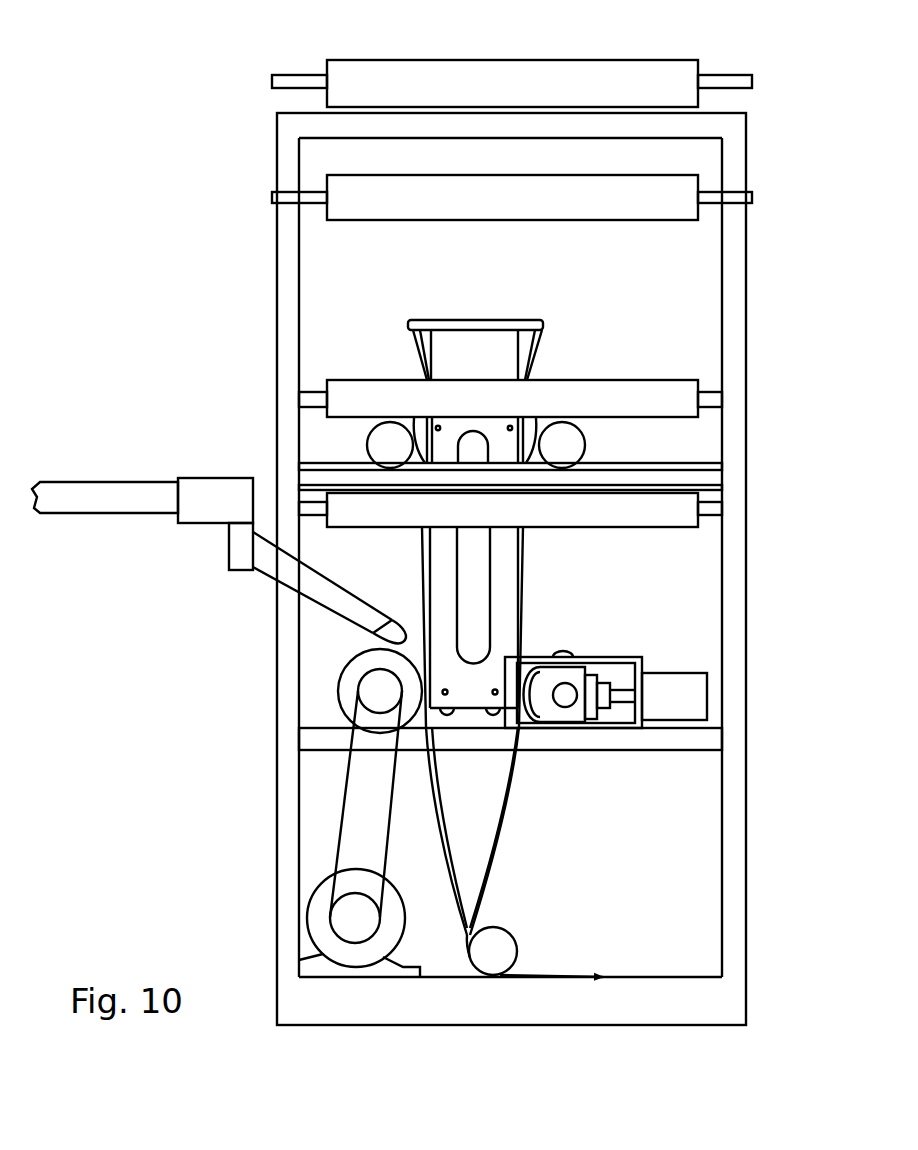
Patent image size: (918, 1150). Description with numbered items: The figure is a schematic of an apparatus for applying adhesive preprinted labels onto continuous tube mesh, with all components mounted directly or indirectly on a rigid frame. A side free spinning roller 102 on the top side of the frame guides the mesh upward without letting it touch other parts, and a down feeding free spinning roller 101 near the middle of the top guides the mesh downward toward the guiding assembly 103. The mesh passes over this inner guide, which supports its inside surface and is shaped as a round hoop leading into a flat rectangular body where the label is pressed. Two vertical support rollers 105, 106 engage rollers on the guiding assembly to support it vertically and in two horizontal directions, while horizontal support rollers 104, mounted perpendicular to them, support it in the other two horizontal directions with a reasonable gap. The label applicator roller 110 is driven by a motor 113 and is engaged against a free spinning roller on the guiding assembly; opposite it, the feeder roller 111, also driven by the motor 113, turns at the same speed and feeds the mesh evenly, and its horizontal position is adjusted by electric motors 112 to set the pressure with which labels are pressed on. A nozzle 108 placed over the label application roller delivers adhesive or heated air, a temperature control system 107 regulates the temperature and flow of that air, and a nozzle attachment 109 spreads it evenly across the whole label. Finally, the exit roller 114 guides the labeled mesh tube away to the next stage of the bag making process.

The down feeding free spinning roller 101 is at (627, 32).
The side free spinning roller 102 is at (570, 195).
The guiding assembly 103 is at (528, 328).
The horizontal support rollers 104 is at (628, 357).
The vertical support roller 105 is at (575, 455).
The vertical support roller 106 is at (376, 456).
The temperature control system 107 is at (155, 503).
The nozzle 108 is at (313, 577).
The nozzle attachment 109 is at (385, 640).
The label applicator roller 110 is at (343, 703).
The feeder roller 111 is at (572, 650).
The electric motors 112 is at (690, 683).
The motor 113 is at (318, 935).
The exit roller 114 is at (512, 938).